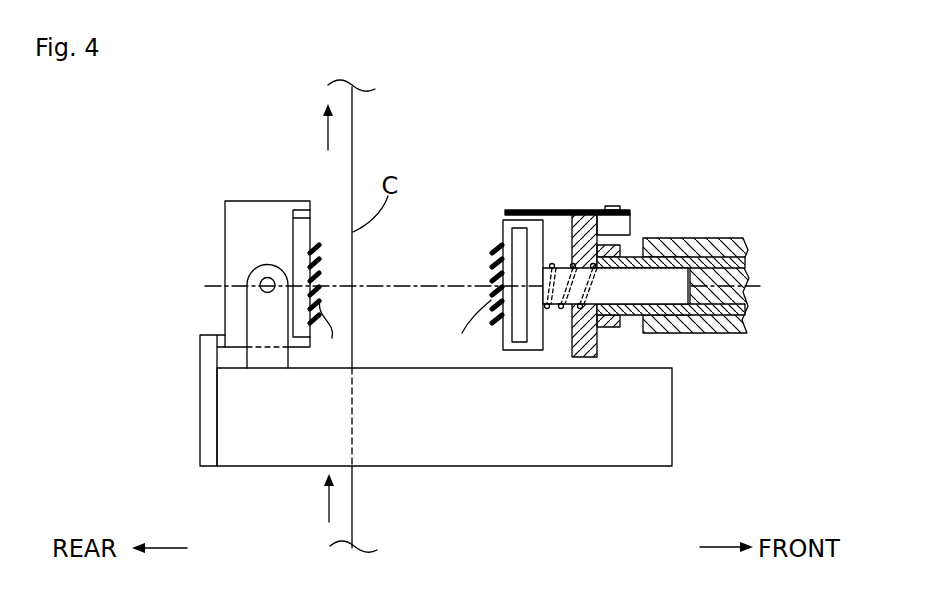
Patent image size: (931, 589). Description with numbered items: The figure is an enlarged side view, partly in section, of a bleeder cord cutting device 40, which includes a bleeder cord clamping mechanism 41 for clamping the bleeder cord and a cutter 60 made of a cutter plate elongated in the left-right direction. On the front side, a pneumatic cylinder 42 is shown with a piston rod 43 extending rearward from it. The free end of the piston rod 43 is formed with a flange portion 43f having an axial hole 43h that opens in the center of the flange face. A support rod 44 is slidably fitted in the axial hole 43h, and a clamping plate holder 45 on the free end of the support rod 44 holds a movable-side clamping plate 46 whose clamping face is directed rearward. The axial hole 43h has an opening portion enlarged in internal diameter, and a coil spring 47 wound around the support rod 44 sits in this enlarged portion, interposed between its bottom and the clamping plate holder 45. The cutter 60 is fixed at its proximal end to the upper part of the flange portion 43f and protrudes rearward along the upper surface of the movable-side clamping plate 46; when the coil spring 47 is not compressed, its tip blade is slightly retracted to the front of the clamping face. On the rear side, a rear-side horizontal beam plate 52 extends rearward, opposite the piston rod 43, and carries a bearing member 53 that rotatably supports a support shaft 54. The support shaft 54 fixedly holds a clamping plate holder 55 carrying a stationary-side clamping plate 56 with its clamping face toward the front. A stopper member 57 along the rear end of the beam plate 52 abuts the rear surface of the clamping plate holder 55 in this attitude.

The bleeder cord cutting device 40 is at (516, 148).
The bleeder cord clamping mechanism 41 is at (412, 148).
The pneumatic cylinder 42 is at (715, 237).
The piston rod 43 is at (713, 307).
The flange portion 43f is at (583, 358).
The axial hole 43h is at (678, 280).
The support rod 44 is at (630, 317).
The clamping plate holder 45 is at (523, 351).
The movable-side clamping plate 46 is at (492, 243).
The coil spring 47 is at (550, 308).
The rear-side horizontal beam plate 52 is at (427, 467).
The bearing member 53 is at (247, 310).
The support shaft 54 is at (262, 279).
The clamping plate holder 55 is at (265, 200).
The stationary-side clamping plate 56 is at (302, 232).
The stopper member 57 is at (197, 339).
The cutter 60 is at (552, 210).